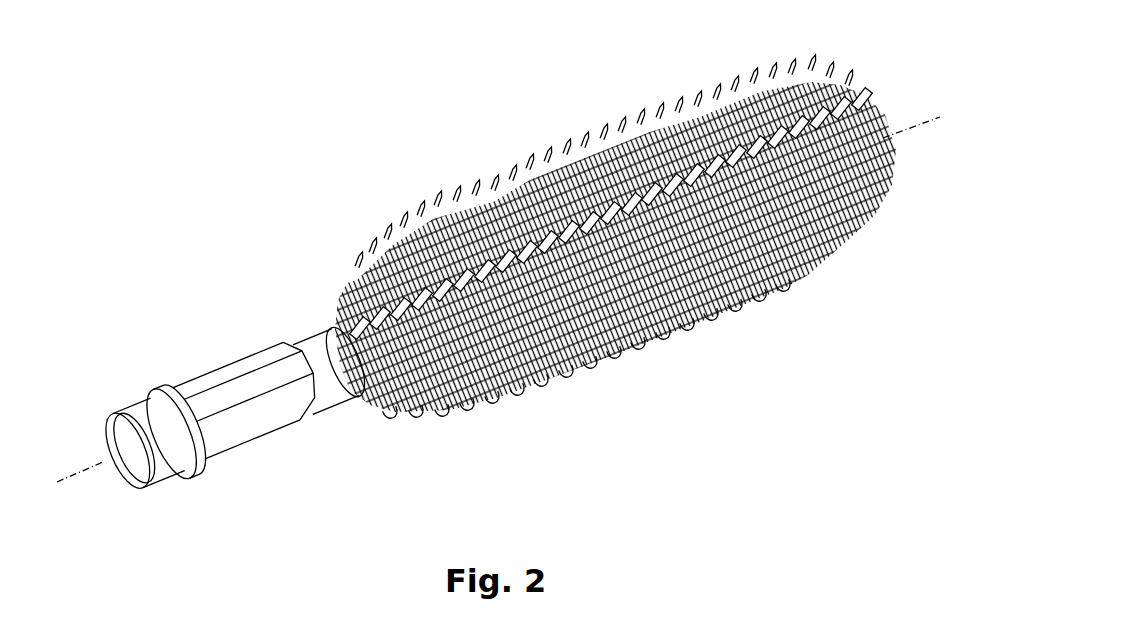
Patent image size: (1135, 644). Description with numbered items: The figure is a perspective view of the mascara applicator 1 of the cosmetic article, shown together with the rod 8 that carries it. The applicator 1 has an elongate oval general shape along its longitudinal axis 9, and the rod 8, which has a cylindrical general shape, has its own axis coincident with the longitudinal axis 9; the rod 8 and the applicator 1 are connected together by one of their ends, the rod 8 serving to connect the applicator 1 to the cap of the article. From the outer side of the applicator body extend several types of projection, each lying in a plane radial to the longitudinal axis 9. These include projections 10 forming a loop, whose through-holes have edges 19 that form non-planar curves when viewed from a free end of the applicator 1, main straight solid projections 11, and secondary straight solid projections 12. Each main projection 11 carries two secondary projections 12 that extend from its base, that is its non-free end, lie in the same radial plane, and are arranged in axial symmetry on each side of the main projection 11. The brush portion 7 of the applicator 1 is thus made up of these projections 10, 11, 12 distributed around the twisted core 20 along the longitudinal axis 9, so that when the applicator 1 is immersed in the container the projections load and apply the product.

The mascara applicator 1 is at (300, 178).
The brush 7 is at (620, 263).
The rod 8 is at (272, 440).
The longitudinal axis 9 is at (60, 484).
The projections forming a loop 10 is at (823, 280).
The main straight solid projections 11 is at (498, 203).
The secondary straight solid projections 12 is at (718, 317).
The edges of the through-holes 19 is at (640, 352).
The twisted core 20 is at (637, 117).